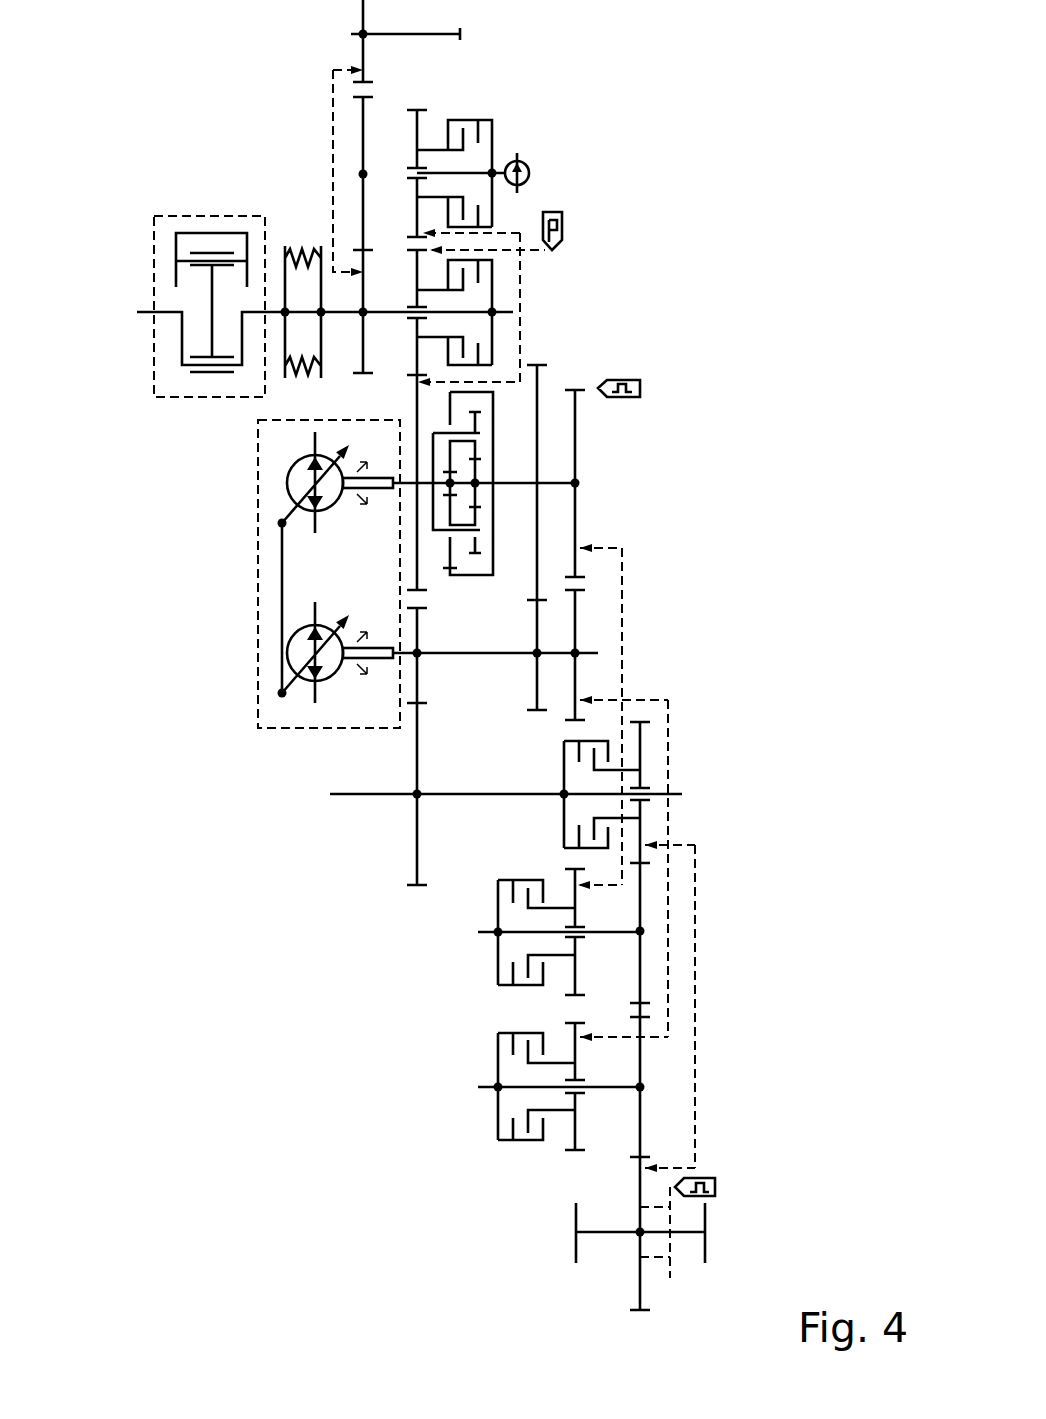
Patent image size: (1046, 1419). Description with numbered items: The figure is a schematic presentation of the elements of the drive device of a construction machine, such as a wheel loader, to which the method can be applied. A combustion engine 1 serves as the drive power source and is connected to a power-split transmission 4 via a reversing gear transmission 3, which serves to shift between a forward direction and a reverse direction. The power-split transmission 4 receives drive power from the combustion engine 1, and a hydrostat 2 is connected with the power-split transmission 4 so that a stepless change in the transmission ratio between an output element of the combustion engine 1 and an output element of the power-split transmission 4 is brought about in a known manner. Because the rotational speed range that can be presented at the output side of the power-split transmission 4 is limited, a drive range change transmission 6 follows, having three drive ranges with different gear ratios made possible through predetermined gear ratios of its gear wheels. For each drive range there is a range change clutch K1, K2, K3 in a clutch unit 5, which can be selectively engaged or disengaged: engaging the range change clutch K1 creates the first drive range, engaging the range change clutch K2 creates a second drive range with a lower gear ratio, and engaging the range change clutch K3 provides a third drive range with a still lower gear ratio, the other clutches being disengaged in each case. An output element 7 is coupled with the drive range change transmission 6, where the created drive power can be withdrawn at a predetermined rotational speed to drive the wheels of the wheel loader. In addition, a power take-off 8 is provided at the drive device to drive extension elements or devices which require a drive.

The combustion engine 1 is at (148, 196).
The hydrostat 2 is at (230, 556).
The reversing gear transmission 3 is at (565, 273).
The power-split transmission 4 is at (518, 532).
The clutch unit 5 is at (344, 940).
The drive range change transmission 6 is at (747, 703).
The output element 7 is at (576, 1212).
The power take-off 8 is at (680, 17).
The range change clutch K1 is at (542, 822).
The range change clutch K2 is at (468, 959).
The range change clutch K3 is at (463, 1071).